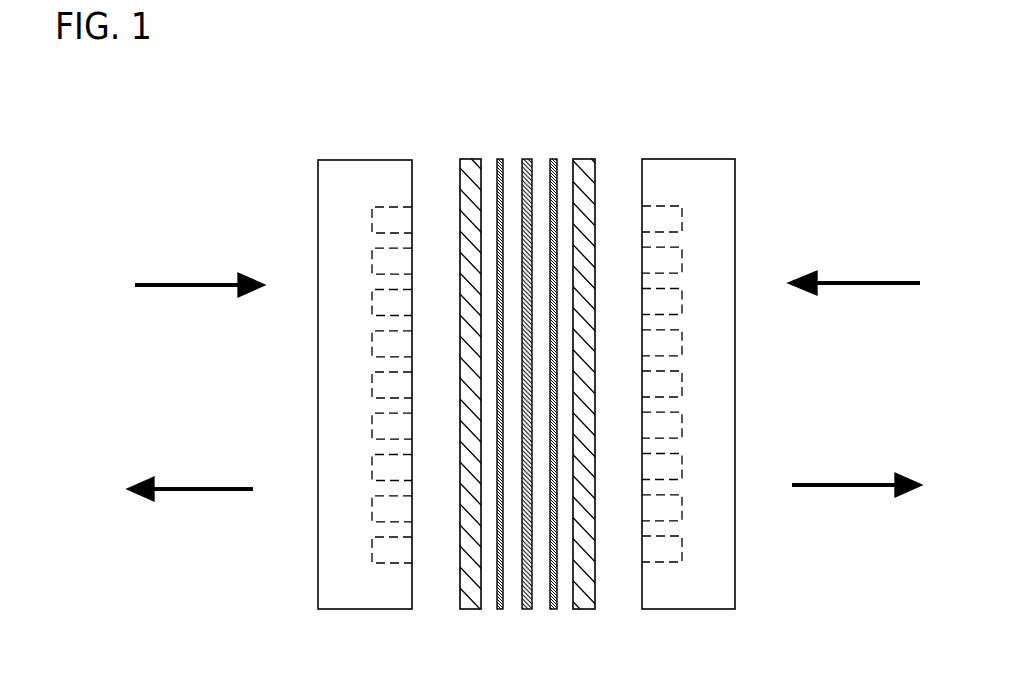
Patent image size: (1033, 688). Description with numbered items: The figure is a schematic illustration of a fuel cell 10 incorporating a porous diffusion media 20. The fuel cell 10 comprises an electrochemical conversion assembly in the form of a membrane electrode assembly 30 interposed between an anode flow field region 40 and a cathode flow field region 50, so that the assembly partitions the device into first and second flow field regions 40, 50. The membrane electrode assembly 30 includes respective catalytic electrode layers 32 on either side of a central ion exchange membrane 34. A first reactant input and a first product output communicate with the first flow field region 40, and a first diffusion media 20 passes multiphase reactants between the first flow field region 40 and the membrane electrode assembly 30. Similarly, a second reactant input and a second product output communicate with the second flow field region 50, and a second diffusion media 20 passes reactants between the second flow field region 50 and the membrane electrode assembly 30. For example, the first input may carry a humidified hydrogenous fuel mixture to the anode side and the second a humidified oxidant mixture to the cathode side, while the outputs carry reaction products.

The fuel cell 10 is at (813, 228).
The porous diffusion media 20 is at (470, 159).
The membrane electrode assembly 30 is at (526, 380).
The catalytic electrode layers 32 is at (500, 609).
The ion exchange membrane 34 is at (527, 609).
The anode flow field region 40 is at (402, 135).
The cathode flow field region 50 is at (648, 128).